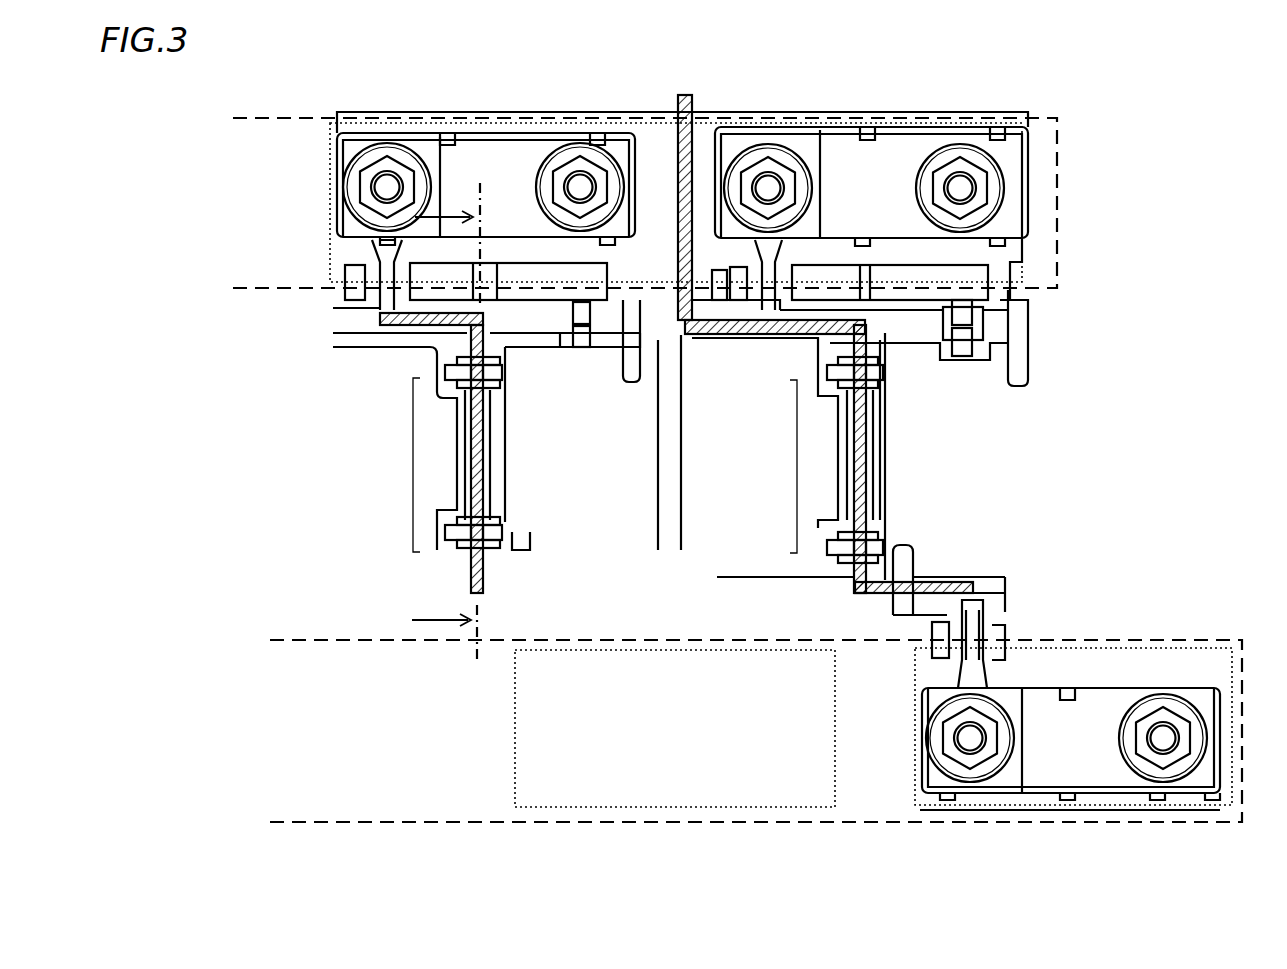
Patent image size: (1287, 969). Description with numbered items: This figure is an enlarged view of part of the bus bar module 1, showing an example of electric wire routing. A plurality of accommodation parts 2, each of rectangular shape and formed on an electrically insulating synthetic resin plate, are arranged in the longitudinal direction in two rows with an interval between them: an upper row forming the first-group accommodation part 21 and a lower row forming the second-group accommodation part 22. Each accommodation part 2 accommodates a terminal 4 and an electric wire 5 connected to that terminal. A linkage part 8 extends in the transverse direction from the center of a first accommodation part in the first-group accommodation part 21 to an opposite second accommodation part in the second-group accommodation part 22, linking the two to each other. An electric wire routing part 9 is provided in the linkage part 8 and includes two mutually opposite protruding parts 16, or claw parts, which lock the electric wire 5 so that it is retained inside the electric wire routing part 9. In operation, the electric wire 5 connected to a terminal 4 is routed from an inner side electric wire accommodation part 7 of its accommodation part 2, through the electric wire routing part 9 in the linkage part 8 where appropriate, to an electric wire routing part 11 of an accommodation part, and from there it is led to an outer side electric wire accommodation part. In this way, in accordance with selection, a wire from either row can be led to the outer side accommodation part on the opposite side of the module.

The bus bar module 1 is at (256, 540).
The accommodation part 2 is at (330, 195).
The terminal 4 is at (725, 462).
The electric wire 5 is at (485, 472).
The inner side electric wire accommodation part 7 is at (568, 357).
The linkage part 8 is at (413, 465).
The electric wire routing part 9 is at (493, 437).
The electric wire routing part 11 is at (669, 338).
The protruding part 16 is at (445, 368).
The first-group accommodation part 21 is at (1050, 118).
The second-group accommodation part 22 is at (1172, 642).